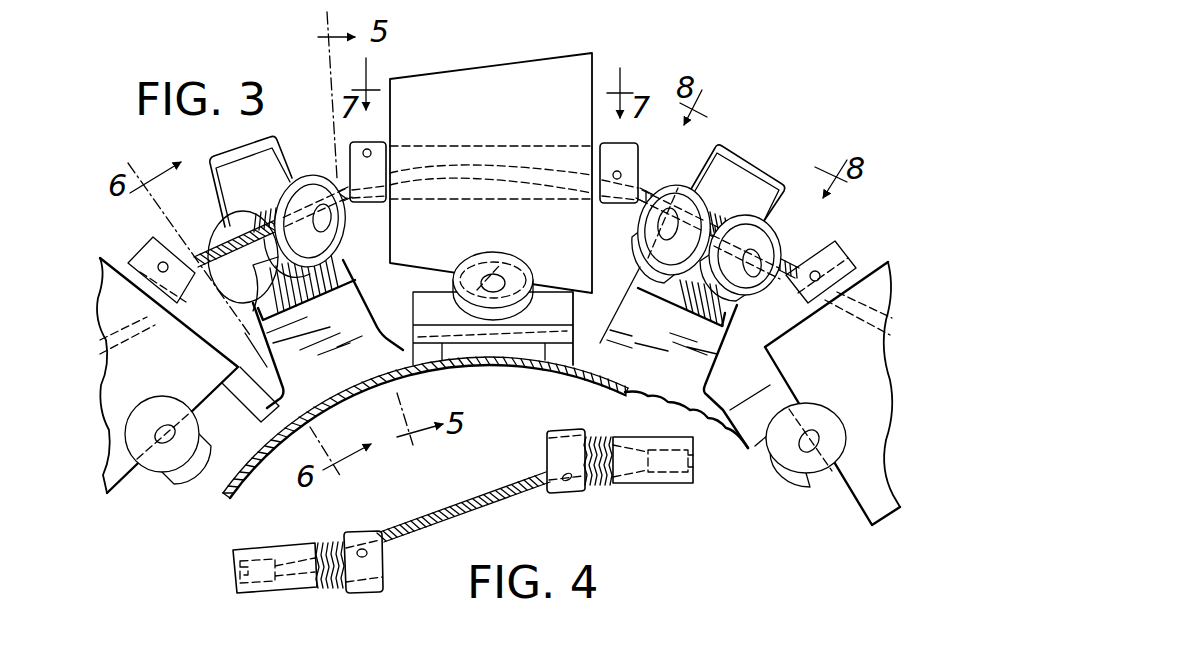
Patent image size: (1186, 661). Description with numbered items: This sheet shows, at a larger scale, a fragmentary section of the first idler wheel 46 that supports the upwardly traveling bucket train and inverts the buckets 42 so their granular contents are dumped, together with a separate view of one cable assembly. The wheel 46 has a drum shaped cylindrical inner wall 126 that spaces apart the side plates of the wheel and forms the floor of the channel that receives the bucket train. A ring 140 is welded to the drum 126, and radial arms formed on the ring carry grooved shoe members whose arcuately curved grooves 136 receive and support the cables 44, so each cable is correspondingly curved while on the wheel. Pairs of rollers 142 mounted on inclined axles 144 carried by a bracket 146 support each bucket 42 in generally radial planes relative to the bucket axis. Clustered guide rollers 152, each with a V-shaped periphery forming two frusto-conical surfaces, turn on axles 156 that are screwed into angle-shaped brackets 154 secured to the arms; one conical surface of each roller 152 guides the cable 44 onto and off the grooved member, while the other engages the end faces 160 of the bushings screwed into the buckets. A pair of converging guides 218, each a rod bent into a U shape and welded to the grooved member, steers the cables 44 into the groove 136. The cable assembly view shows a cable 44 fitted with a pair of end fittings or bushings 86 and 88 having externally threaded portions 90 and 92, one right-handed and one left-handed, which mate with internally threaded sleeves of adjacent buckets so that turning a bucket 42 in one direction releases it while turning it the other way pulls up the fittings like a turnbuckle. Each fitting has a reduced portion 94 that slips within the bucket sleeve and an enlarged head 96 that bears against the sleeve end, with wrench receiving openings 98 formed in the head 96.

In FIG. 3, the bucket 42 is at (491, 154).
In FIG. 3, the cable 44 is at (645, 185).
In FIG. 3, the first idler wheel 46 is at (789, 136).
In FIG. 3, the end fitting 86 is at (362, 202).
In FIG. 4, the end fitting 86 is at (559, 428).
In FIG. 3, the end fitting 88 is at (616, 203).
In FIG. 4, the end fitting 88 is at (362, 598).
In FIG. 4, the externally threaded portion 90 is at (600, 484).
In FIG. 4, the externally threaded portion 92 is at (332, 544).
In FIG. 4, the reduced portion 94 is at (660, 484).
In FIG. 4, the enlarged head 96 is at (564, 483).
In FIG. 4, the wrench receiving opening 98 is at (370, 553).
In FIG. 3, the drum shaped cylindrical inner wall 126 is at (445, 370).
In FIG. 3, the groove 136 is at (241, 216).
In FIG. 3, the ring 140 is at (397, 350).
In FIG. 3, the roller 142 is at (158, 410).
In FIG. 3, the axle 144 is at (496, 275).
In FIG. 3, the bracket 146 is at (555, 303).
In FIG. 3, the guide roller 152 is at (318, 185).
In FIG. 3, the angle-shaped bracket 154 is at (318, 300).
In FIG. 3, the axle 156 is at (750, 220).
In FIG. 3, the end face 160 is at (347, 148).
In FIG. 3, the converging guide 218 is at (245, 158).